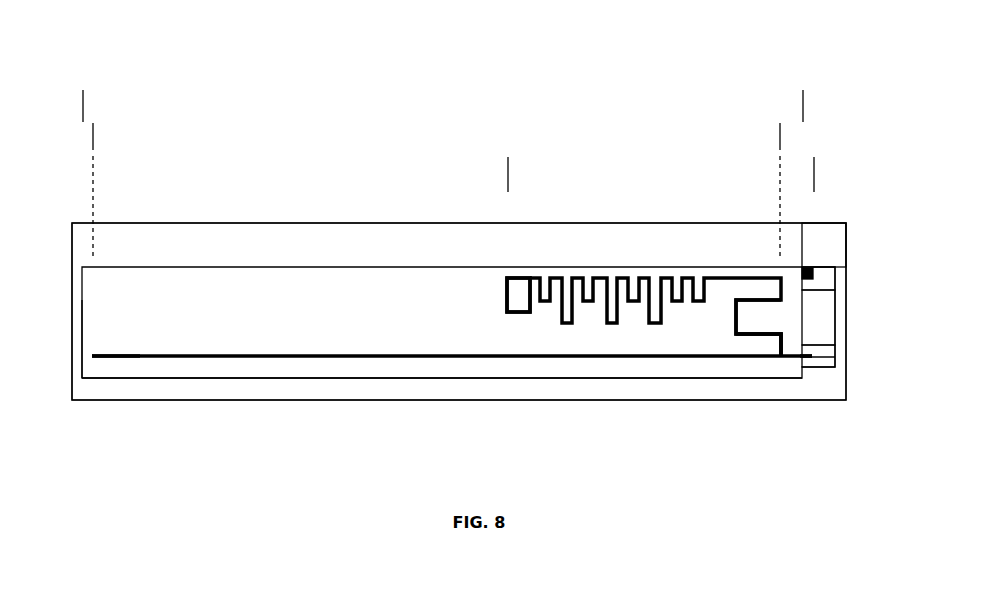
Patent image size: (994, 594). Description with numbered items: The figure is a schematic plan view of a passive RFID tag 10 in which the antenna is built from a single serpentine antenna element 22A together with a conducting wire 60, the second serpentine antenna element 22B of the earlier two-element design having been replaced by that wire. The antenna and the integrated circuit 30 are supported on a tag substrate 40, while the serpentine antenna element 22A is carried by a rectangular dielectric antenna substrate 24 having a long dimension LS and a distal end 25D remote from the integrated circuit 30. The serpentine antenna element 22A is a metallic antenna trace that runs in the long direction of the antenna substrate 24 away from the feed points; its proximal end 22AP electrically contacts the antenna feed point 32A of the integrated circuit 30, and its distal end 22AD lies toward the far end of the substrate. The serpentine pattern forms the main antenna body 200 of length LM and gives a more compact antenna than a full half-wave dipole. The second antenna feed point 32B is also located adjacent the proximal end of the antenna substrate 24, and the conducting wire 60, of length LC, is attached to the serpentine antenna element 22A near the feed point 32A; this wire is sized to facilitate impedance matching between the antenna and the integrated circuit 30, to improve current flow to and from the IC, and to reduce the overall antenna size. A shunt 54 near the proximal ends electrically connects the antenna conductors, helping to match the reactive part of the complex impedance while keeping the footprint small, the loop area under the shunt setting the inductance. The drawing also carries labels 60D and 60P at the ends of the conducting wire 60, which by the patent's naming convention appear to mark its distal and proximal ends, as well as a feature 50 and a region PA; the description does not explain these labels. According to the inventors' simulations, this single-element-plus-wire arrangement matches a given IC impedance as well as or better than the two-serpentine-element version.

The passive RFID tag 10 is at (752, 64).
The long dimension of antenna substrate LS is at (802, 101).
The length of conducting wire LC is at (779, 135).
The length of serpentine antenna element LM is at (813, 168).
The serpentine antenna element 22A is at (740, 277).
The proximal end of serpentine antenna element 22AP is at (812, 270).
The distal end of serpentine antenna element 22AD is at (500, 289).
The serpentine antenna element 22B is at (725, 358).
The antenna substrate 24 is at (627, 378).
The distal end of antenna substrate 25D is at (82, 333).
The integrated circuit 30 is at (808, 327).
The antenna feed point 32A is at (836, 280).
The antenna feed point 32B is at (836, 353).
The tag substrate 40 is at (816, 254).
The housing 50 is at (358, 347).
The shunt 54 is at (760, 335).
The conducting wire 60 is at (304, 350).
The ground plane distal end 60D is at (93, 355).
The ground plane pad 60P is at (812, 358).
The main antenna body 200 is at (558, 366).
The pad area PA is at (518, 300).